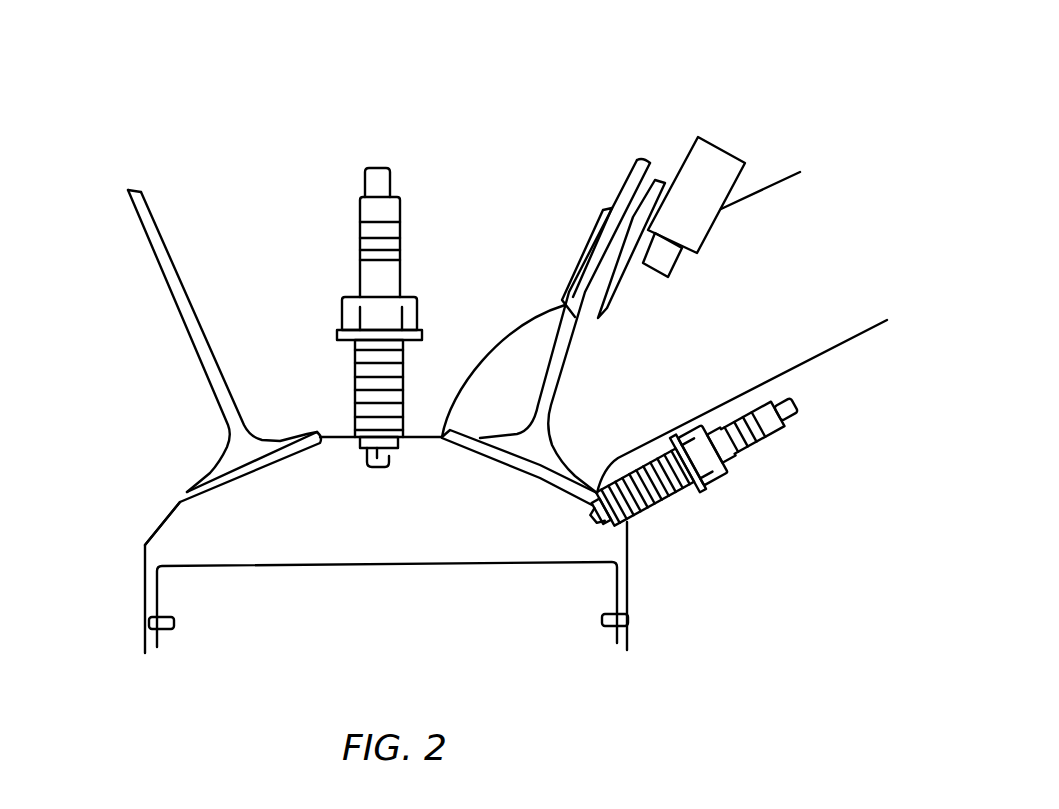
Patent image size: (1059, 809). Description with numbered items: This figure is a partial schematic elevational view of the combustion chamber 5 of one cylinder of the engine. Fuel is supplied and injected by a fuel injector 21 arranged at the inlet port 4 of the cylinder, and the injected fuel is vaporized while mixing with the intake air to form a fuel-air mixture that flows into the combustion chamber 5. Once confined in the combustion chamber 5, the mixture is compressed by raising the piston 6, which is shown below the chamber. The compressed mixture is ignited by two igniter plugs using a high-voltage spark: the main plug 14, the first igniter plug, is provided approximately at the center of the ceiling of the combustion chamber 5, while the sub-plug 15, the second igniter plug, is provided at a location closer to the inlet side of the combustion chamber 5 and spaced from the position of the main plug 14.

The inlet port 4 is at (795, 362).
The combustion chamber 5 is at (247, 538).
The piston 6 is at (227, 628).
The main plug 14 is at (353, 367).
The sub-plug 15 is at (663, 502).
The fuel injector 21 is at (695, 162).